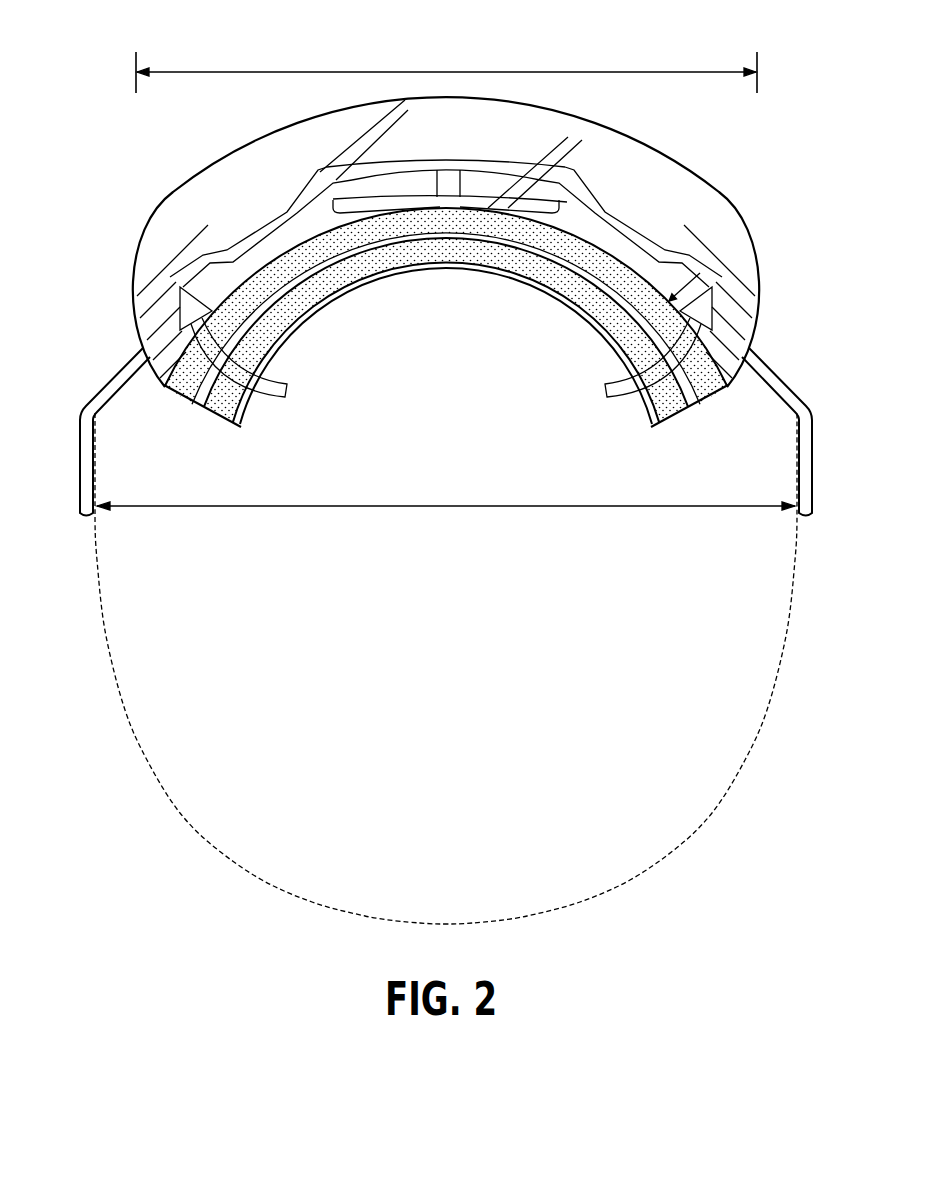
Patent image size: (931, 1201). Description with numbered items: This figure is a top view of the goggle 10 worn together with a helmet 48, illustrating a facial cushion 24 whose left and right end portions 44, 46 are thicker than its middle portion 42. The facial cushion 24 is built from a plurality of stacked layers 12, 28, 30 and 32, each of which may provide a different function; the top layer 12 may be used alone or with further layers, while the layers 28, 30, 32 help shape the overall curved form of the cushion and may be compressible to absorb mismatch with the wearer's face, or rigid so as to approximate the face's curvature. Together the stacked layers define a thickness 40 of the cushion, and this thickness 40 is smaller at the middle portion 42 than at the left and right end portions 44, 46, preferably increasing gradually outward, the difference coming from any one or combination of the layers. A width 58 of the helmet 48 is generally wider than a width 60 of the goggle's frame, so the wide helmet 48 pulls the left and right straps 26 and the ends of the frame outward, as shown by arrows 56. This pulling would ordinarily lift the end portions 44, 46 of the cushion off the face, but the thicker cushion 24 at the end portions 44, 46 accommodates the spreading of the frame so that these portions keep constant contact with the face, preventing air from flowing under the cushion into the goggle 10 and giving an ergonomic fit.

The goggle 10 is at (698, 165).
The top layer 12 is at (656, 431).
The facial cushion 24 is at (191, 401).
The straps 26 is at (85, 410).
The layer 28 is at (667, 420).
The layer 30 is at (700, 400).
The layer 32 is at (719, 395).
The thickness 40 is at (609, 356).
The middle portion 42 is at (482, 296).
The left end portion 44 is at (293, 417).
The right end portion 46 is at (596, 419).
The helmet 48 is at (705, 809).
The arrows 56 is at (238, 368).
The width of the helmet 58 is at (437, 508).
The width of the goggle's frame 60 is at (437, 71).